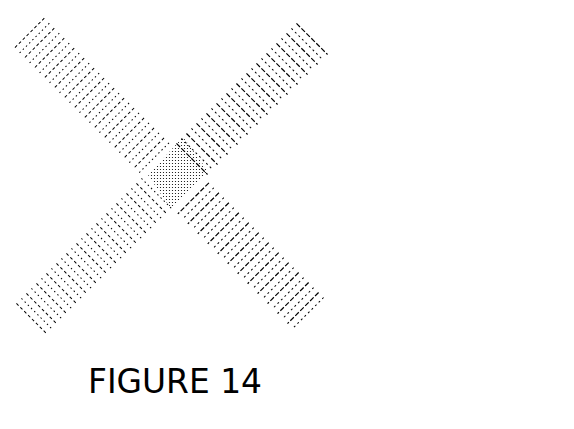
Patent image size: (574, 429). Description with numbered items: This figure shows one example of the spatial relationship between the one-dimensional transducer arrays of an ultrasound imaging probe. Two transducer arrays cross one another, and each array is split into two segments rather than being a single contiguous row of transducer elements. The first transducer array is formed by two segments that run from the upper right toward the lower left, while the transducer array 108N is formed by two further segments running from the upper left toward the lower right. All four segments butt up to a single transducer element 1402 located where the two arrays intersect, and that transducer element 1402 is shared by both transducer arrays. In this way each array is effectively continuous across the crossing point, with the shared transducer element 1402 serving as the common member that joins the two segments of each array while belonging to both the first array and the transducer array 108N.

The transducer array 108N is at (213, 181).
The transducer element 1402 is at (158, 177).